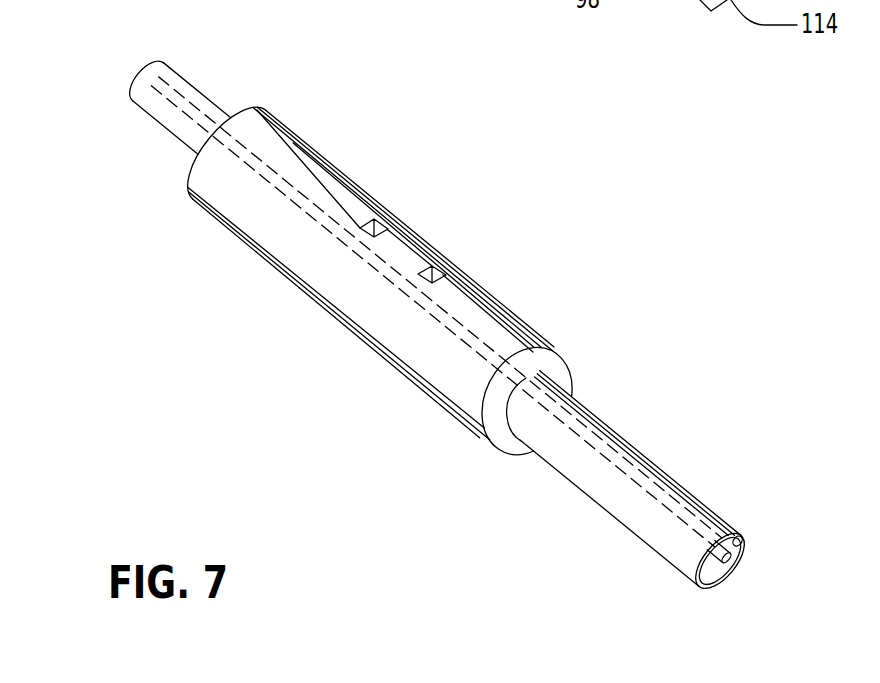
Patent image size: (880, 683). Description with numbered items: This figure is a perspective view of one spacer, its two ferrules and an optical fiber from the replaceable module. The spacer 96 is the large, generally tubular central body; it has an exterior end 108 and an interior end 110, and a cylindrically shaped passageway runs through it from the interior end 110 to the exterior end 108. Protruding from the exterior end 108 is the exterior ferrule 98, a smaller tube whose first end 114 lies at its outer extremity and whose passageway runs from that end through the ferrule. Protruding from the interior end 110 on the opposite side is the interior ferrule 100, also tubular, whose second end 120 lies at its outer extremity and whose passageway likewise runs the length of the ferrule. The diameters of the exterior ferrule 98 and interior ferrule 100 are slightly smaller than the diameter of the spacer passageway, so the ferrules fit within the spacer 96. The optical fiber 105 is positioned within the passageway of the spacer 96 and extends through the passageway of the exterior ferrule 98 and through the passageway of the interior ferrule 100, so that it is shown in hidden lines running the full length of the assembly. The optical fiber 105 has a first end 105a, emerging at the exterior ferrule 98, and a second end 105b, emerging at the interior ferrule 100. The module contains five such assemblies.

The spacer 96 is at (462, 385).
The exterior ferrule 98 is at (662, 541).
The interior ferrule 100 is at (166, 128).
The optical fiber 105 is at (387, 277).
The first end 105a is at (708, 590).
The second end 105b is at (140, 72).
The exterior end 108 is at (553, 367).
The interior end 110 is at (251, 110).
The first end 114 is at (748, 547).
The second end 120 is at (147, 70).